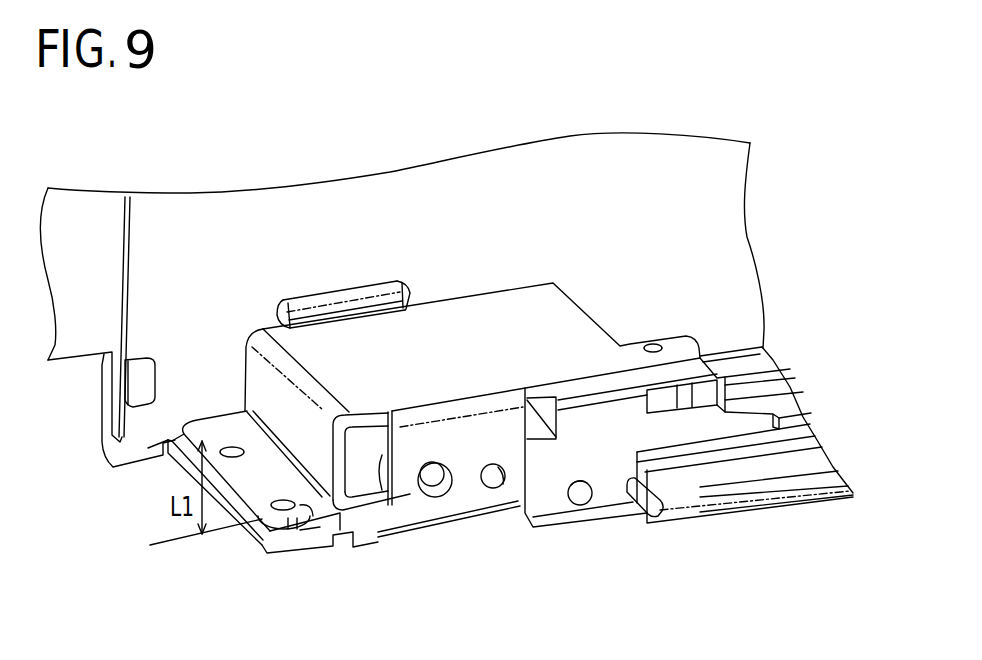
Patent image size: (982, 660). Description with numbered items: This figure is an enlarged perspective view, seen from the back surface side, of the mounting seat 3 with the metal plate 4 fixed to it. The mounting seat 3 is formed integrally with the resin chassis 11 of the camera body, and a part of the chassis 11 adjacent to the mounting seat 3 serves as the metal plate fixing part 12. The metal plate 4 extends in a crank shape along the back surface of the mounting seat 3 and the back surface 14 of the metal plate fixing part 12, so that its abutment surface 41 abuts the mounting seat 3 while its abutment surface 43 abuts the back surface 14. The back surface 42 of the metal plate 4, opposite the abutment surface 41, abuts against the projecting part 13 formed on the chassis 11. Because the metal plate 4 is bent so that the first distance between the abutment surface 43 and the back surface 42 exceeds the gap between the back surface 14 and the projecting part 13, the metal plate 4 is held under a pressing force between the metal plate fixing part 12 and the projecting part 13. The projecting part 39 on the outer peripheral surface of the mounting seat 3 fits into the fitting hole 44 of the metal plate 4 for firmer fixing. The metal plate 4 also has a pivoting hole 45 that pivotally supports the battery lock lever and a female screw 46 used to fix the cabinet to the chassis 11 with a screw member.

The chassis 11 is at (203, 232).
The projecting part 13 is at (355, 293).
The metal plate 4 is at (415, 328).
The back surface 42 is at (390, 387).
The pivoting hole 45 is at (650, 343).
The female screw 46 is at (228, 444).
The metal plate fixing part 12 is at (295, 553).
The abutment surface 43 is at (273, 538).
The back surface 14 is at (322, 523).
The mounting seat 3 is at (355, 465).
The abutment surface 41 is at (383, 456).
The fitting hole 44 is at (487, 470).
The projecting part 39 is at (502, 478).